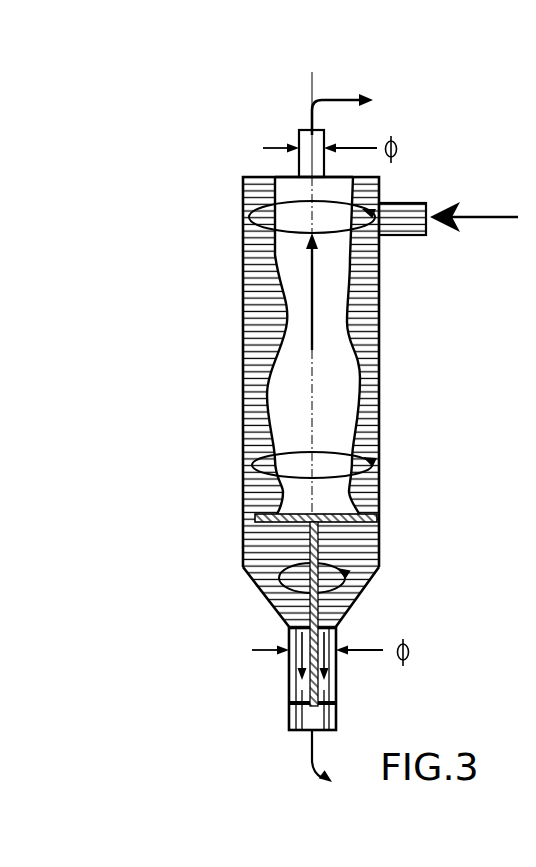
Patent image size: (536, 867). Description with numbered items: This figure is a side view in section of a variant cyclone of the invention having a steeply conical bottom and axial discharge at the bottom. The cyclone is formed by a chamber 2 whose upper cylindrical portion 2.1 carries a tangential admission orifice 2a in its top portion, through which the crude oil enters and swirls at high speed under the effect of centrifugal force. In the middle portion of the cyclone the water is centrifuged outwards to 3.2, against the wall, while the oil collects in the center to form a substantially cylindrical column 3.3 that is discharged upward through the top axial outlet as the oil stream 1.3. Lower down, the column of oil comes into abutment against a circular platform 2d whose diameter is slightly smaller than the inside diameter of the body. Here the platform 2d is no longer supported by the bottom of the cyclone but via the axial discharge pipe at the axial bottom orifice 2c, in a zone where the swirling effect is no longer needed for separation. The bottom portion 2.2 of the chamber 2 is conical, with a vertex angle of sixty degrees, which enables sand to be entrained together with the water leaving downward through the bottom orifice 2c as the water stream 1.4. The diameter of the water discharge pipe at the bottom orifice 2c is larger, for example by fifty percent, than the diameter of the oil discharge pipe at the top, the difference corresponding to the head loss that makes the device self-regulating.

The oil discharged from the top axial outlet 1.3 is at (340, 98).
The water discharged from the bottom axial orifice 1.4 is at (312, 762).
The cylindrical body 2 is at (203, 270).
The cylindrical portion of the cyclone 2.1 is at (243, 328).
The bottom portion 2.2 is at (266, 597).
The tangential admission orifice 2a is at (400, 236).
The axial bottom orifice 2c is at (337, 694).
The platform 2d is at (377, 518).
The water centrifuged outwards 3.2 is at (373, 372).
The column of oil 3.3 is at (293, 406).